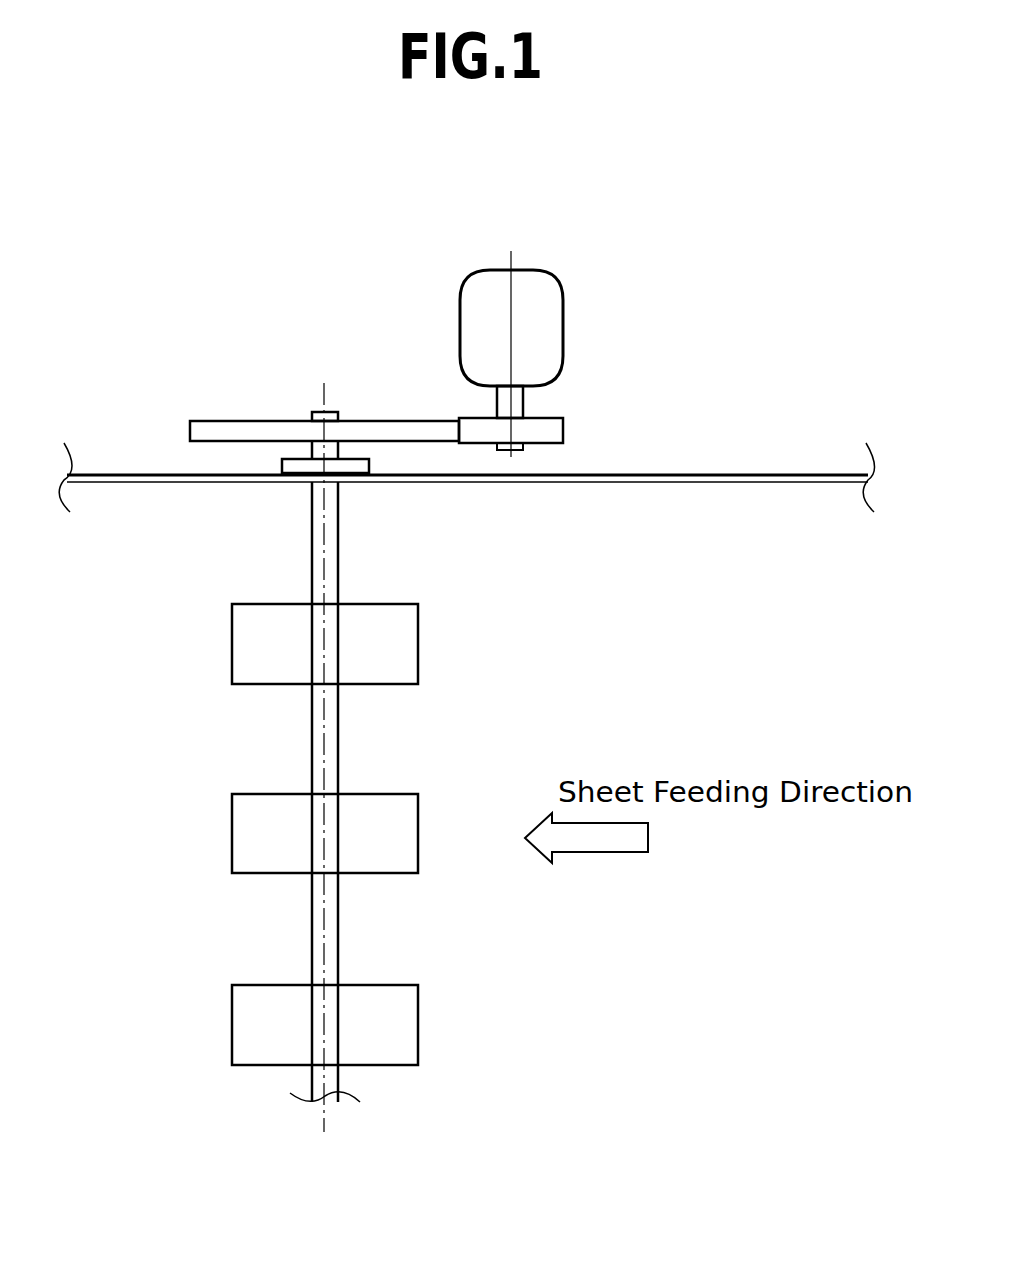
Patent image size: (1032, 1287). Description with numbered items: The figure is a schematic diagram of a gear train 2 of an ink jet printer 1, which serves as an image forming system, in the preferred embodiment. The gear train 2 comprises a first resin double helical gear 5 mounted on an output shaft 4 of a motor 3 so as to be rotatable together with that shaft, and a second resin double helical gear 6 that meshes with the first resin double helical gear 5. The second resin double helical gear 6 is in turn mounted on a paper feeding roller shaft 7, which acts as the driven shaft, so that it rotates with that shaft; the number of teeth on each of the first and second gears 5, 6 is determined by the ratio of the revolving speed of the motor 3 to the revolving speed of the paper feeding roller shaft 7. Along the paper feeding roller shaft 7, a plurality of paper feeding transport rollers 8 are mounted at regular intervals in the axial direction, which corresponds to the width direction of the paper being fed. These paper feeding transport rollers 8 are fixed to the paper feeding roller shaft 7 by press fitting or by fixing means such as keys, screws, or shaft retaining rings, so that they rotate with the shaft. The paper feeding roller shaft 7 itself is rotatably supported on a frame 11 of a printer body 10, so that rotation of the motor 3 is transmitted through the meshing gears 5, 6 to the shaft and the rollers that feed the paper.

The ink jet printer 1 is at (610, 321).
The gear train 2 is at (165, 437).
The motor 3 is at (475, 317).
The output shaft 4 is at (523, 403).
The first resin double helical gear 5 is at (555, 430).
The second resin double helical gear 6 is at (224, 430).
The paper feeding roller shaft 7 is at (335, 574).
The paper feeding transport rollers 8 is at (410, 650).
The printer body 10 is at (725, 470).
The frame 11 is at (192, 478).